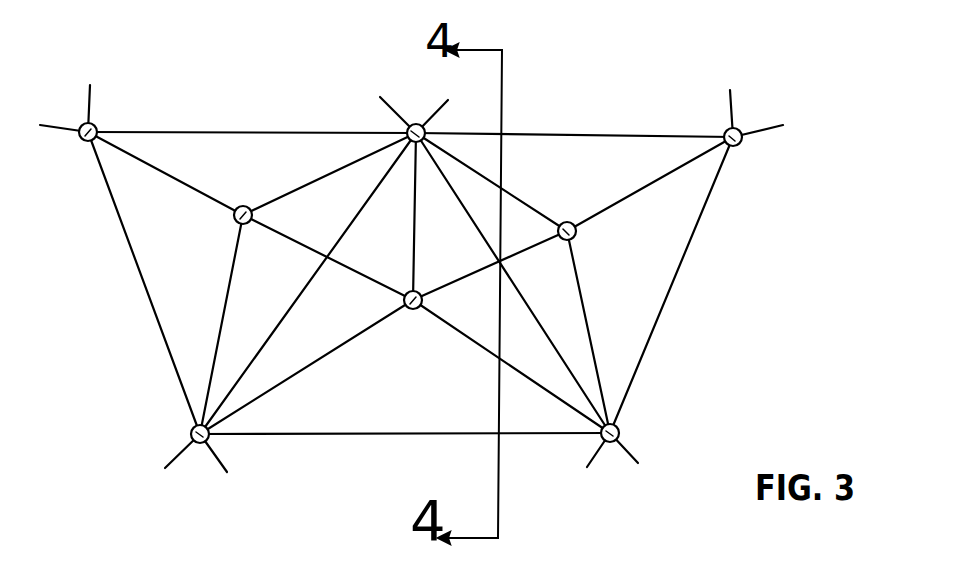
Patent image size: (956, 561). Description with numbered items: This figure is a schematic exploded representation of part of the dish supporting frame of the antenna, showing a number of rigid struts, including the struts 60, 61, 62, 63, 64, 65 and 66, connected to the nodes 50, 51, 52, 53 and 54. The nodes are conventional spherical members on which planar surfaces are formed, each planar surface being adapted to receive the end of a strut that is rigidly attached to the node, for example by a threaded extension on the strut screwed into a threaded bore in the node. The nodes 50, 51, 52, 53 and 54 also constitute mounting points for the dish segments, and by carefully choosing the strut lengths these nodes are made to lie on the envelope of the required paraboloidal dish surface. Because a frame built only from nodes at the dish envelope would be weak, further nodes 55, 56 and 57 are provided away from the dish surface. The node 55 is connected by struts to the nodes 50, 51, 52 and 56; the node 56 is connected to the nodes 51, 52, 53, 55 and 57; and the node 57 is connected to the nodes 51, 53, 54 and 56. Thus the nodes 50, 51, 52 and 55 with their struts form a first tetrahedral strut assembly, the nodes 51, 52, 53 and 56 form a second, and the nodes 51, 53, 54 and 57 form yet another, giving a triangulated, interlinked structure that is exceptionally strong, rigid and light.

The node 50 is at (107, 121).
The node 51 is at (402, 132).
The node 52 is at (190, 433).
The node 53 is at (620, 433).
The node 54 is at (723, 132).
The node 55 is at (230, 218).
The node 56 is at (415, 310).
The node 57 is at (577, 237).
The strut 60 is at (202, 131).
The strut 61 is at (142, 287).
The strut 62 is at (347, 437).
The strut 63 is at (628, 137).
The strut 64 is at (682, 273).
The strut 65 is at (272, 335).
The strut 66 is at (547, 326).